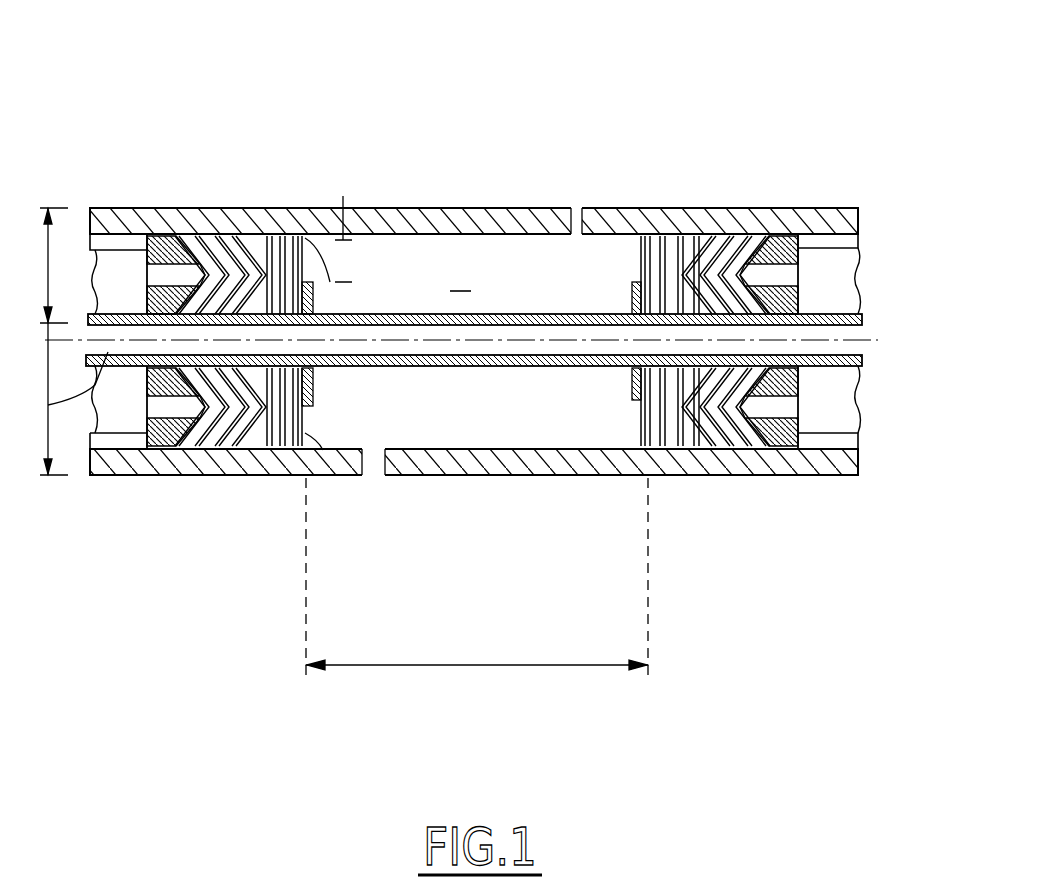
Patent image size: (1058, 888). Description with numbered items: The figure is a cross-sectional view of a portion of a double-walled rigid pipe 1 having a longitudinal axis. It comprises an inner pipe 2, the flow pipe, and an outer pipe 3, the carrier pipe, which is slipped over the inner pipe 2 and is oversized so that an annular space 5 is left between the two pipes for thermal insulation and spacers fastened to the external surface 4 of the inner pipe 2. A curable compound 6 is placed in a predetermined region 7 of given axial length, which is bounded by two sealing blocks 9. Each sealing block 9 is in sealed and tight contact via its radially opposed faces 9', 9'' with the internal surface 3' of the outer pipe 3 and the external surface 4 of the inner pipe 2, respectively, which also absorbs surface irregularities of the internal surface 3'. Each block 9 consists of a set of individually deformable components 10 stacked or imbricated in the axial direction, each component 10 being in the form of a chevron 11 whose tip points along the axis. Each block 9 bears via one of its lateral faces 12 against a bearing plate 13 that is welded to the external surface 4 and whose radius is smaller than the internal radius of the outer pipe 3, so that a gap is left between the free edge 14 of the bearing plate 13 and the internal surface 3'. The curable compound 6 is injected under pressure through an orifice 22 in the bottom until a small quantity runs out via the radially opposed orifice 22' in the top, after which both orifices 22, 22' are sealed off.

The double-walled rigid pipe 1 is at (738, 172).
The inner pipe 2 is at (818, 320).
The outer pipe 3 is at (474, 168).
The internal surface 3' is at (474, 288).
The external surface 4 is at (402, 368).
The annular space 5 is at (113, 240).
The curable compound 6 is at (460, 273).
The predetermined region 7 is at (520, 240).
The sealing block 9 is at (719, 458).
The radially opposed face 9' is at (719, 202).
The radially opposed face 9'' is at (829, 341).
The deformable component 10 is at (215, 250).
The chevron 11 is at (213, 397).
The lateral face 12 is at (328, 449).
The bearing plate 13 is at (325, 210).
The free edge 14 is at (641, 400).
The orifice 22 is at (398, 500).
The orifice 22' is at (582, 156).